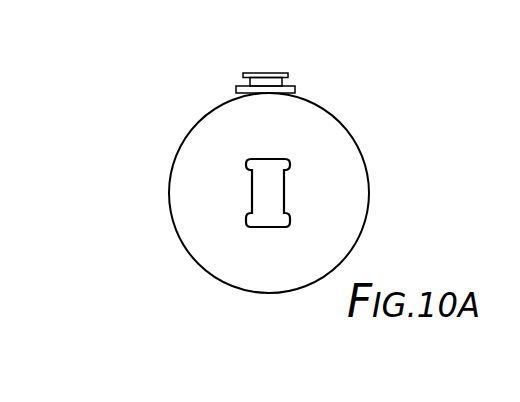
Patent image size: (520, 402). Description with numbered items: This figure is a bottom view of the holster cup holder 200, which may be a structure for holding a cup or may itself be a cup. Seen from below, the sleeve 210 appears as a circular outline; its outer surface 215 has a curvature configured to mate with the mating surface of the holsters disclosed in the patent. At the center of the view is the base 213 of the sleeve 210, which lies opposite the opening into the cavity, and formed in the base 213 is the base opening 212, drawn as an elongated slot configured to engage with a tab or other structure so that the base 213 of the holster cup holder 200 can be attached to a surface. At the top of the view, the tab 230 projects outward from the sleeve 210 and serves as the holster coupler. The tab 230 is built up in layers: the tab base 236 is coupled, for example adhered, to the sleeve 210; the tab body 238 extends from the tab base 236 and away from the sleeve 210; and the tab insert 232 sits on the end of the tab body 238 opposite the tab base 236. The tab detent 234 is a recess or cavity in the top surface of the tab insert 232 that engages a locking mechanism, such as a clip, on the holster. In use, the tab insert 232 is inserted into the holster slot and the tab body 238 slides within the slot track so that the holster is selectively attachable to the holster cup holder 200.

The holster cup holder 200 is at (83, 114).
The sleeve 210 is at (225, 102).
The base opening 212 is at (251, 199).
The base 213 is at (202, 250).
The outer surface 215 is at (369, 163).
The tab 230 is at (297, 63).
The tab insert 232 is at (288, 75).
The tab detent 234 is at (265, 64).
The tab base 236 is at (295, 92).
The tab body 238 is at (250, 82).